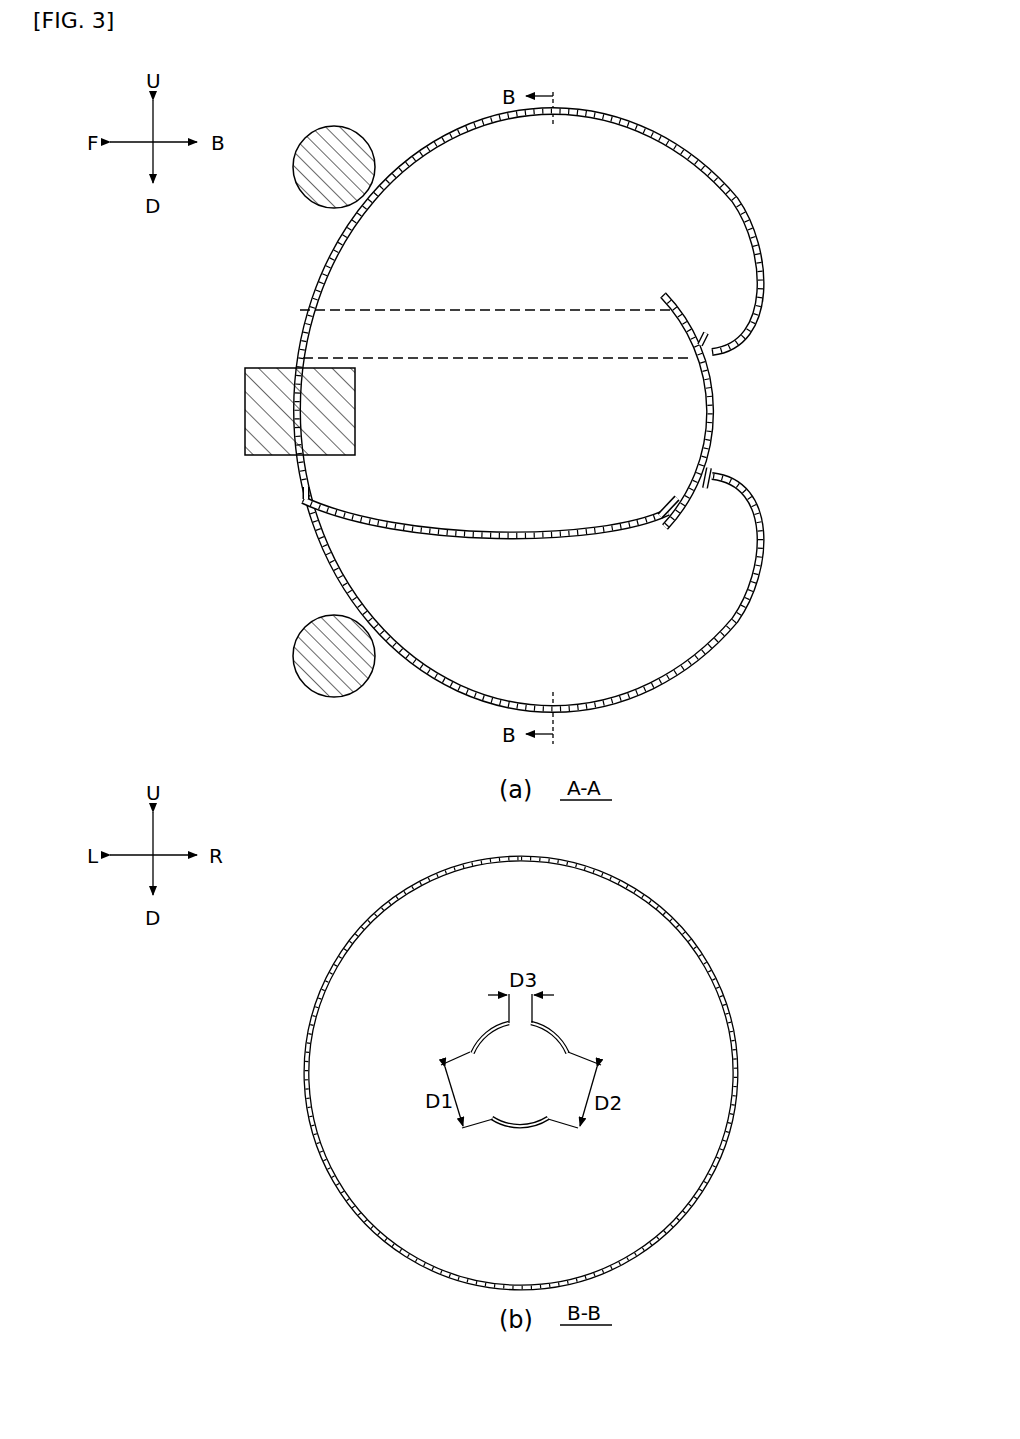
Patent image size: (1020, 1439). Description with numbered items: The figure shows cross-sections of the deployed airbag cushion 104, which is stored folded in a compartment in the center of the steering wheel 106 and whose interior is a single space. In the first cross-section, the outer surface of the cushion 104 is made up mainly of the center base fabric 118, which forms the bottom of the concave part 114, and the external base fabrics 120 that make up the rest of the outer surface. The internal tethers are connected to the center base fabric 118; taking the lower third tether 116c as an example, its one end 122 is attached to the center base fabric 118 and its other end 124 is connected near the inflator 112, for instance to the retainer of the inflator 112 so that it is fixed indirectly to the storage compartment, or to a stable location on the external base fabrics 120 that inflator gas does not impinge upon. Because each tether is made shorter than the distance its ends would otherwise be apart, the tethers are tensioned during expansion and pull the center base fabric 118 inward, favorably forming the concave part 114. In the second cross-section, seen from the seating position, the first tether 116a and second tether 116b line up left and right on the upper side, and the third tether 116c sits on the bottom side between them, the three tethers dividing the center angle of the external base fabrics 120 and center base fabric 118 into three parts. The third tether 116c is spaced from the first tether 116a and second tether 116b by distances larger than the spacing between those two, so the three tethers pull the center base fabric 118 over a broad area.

The cushion 104 is at (411, 126).
The steering wheel 106 is at (300, 177).
The inflator 112 is at (262, 403).
The concave part 114 is at (733, 367).
The first tether 116a is at (418, 305).
The second tether 116b is at (560, 1027).
The third tether 116c is at (377, 533).
The center base fabric 118 is at (718, 408).
The external base fabrics 120 is at (683, 150).
The one end 122 is at (668, 500).
The other end 124 is at (312, 500).